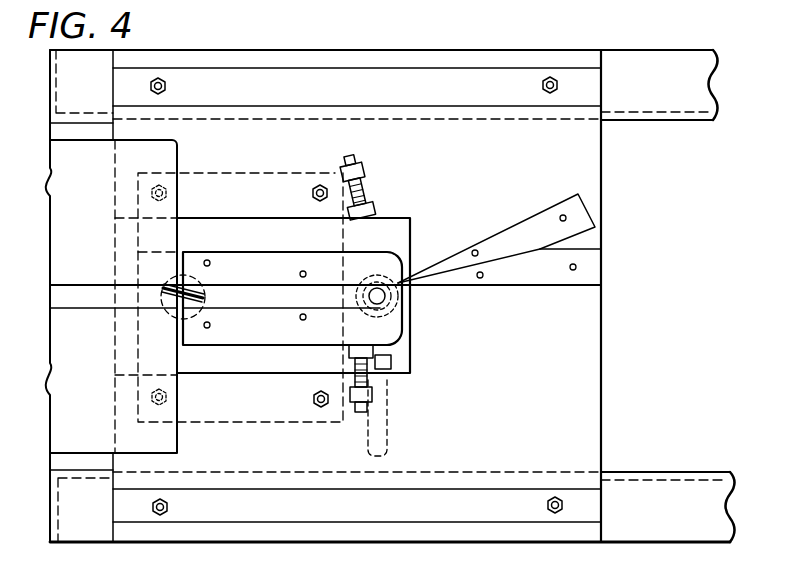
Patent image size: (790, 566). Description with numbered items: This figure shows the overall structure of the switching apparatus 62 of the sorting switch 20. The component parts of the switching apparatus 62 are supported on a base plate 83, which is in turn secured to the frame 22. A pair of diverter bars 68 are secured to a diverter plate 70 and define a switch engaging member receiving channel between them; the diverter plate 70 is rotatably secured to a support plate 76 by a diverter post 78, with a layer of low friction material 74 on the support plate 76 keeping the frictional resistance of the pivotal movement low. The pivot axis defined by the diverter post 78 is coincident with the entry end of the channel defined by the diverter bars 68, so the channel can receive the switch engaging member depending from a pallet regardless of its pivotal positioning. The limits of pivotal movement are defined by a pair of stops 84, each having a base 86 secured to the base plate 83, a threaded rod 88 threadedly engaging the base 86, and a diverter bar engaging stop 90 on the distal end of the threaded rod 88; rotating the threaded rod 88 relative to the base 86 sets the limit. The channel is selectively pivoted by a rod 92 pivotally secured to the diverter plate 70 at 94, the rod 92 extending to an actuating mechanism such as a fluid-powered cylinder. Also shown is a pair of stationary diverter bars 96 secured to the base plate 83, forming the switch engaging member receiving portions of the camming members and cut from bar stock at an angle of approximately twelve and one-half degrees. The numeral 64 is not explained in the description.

The sorting switch 20 is at (616, 297).
The frame 22 is at (679, 472).
The switching apparatus 62 is at (510, 304).
The slide plate 64 is at (94, 238).
The diverter bars 68 is at (224, 254).
The diverter plate 70 is at (265, 296).
The layer of low friction material 74 is at (232, 371).
The support plate 76 is at (141, 402).
The diverter post 78 is at (160, 296).
The base plate 83 is at (602, 333).
The stop 84 is at (383, 208).
The base 86 is at (343, 175).
The threaded rod 88 is at (356, 159).
The diverter bar engaging stop 90 is at (346, 214).
The rod 92 is at (385, 433).
The pivotal connection 94 is at (388, 294).
The stationary diverter bars 96 is at (537, 216).